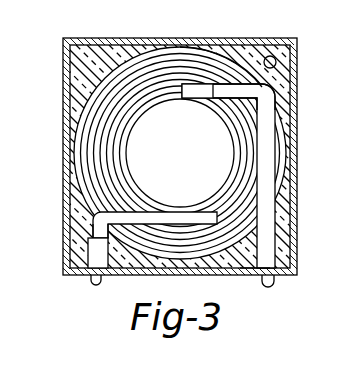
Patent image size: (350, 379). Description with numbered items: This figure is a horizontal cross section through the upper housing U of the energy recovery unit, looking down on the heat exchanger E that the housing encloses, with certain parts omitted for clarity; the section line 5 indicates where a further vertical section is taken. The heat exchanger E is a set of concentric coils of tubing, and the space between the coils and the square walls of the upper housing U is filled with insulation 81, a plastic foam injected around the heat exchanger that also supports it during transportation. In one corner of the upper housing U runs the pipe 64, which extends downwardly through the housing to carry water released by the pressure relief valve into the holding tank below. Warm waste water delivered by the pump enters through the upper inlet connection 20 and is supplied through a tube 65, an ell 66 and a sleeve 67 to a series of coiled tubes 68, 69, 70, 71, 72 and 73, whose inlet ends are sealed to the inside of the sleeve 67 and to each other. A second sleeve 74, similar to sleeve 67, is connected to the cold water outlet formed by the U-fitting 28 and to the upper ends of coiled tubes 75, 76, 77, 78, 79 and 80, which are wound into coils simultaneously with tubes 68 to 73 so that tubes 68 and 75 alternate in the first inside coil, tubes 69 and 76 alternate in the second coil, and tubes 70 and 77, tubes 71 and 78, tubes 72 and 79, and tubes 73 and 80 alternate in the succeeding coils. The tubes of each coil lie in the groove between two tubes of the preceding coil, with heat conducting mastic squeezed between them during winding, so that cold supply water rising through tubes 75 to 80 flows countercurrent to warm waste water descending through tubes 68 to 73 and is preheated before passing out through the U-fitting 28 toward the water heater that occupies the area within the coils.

The upper housing U is at (57, 77).
The heat exchanger E is at (176, 48).
The section line 5- 5 is at (56, 155).
The insulation 81 is at (100, 50).
The pipe 64 is at (264, 57).
The tube 65 is at (270, 214).
The ell 66 is at (260, 99).
The sleeve 67 is at (190, 98).
The coiled tube 68 is at (161, 98).
The coiled tube 69 is at (110, 170).
The coiled tube 70 is at (105, 178).
The coiled tube 71 is at (88, 162).
The coiled tube 72 is at (83, 195).
The coiled tube 73 is at (80, 225).
The sleeve 74 is at (93, 252).
The coiled tube 75 is at (173, 220).
The coiled tube 76 is at (197, 226).
The coiled tube 77 is at (247, 198).
The coiled tube 78 is at (253, 276).
The coiled tube 79 is at (238, 255).
The coiled tube 80 is at (153, 258).
The upper inlet connection 20 is at (274, 284).
The U-fitting 28 is at (97, 286).